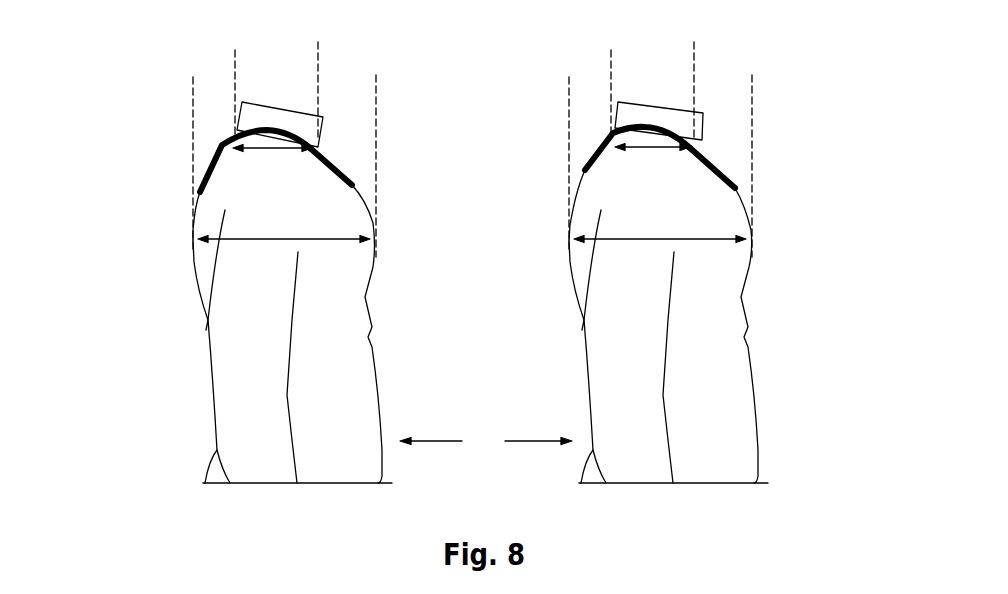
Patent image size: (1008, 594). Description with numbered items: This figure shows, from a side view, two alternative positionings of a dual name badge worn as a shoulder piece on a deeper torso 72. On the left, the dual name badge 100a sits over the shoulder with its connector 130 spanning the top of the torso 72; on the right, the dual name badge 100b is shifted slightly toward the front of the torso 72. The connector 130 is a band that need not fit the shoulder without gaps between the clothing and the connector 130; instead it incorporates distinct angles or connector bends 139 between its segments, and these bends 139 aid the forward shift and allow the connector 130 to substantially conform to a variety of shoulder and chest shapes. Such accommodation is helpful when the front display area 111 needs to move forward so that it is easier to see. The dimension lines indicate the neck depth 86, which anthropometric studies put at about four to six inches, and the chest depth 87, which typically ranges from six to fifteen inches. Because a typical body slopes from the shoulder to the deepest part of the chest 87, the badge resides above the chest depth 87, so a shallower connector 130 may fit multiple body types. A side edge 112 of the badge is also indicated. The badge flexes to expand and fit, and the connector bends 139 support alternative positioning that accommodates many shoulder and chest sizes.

The torso 72 is at (486, 443).
The neck depth 86 is at (461, 166).
The chest depth 87 is at (472, 257).
The dual name badge 100a is at (350, 173).
The dual name badge 100b is at (725, 173).
The front display area 111 is at (333, 163).
The side edge 112 is at (208, 165).
The connector 130 is at (282, 132).
The connector bends 139 is at (257, 122).